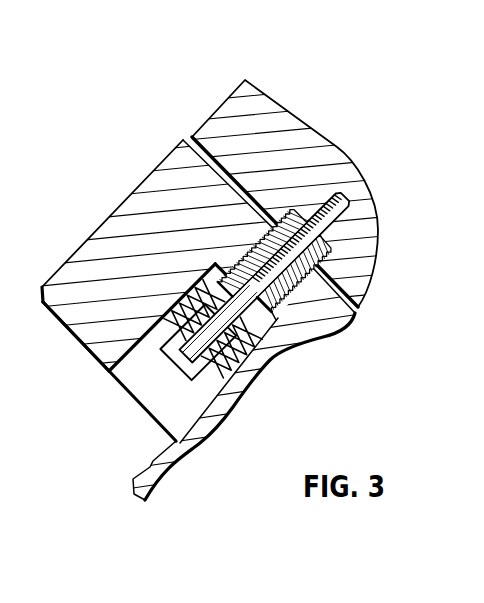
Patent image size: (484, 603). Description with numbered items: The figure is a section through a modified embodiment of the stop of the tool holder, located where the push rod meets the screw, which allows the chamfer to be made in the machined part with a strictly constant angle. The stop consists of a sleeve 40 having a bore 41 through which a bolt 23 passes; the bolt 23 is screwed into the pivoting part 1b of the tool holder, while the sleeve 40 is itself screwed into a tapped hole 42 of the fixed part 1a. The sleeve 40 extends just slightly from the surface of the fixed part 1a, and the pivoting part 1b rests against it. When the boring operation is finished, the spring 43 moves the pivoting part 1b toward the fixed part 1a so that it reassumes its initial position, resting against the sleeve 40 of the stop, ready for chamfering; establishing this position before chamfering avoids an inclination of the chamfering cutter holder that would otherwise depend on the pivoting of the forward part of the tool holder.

The fixed part 1a is at (132, 203).
The pivoting part 1b is at (291, 130).
The bolt 23 is at (192, 368).
The sleeve 40 is at (287, 306).
The bore 41 is at (280, 313).
The tapped hole 42 is at (258, 251).
The spring 43 is at (255, 350).